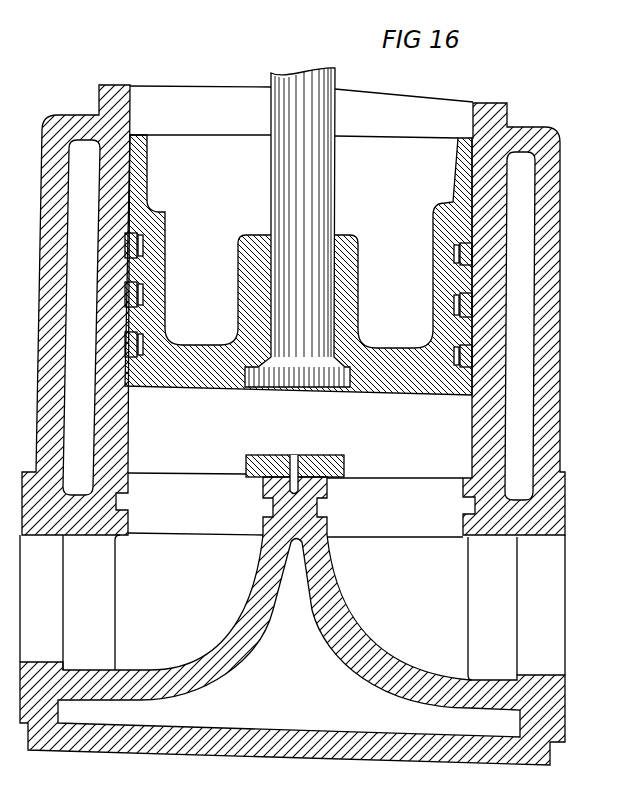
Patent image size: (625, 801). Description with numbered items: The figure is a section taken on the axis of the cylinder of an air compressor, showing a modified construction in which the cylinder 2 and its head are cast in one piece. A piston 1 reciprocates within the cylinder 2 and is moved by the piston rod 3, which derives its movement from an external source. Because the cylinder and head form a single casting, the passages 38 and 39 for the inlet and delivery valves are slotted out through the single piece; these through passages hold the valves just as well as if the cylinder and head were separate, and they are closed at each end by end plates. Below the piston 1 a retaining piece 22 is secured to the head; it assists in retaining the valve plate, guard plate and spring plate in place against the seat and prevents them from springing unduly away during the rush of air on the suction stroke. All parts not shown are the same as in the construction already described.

The piston 1 is at (196, 143).
The cylinder 2 is at (77, 117).
The piston rod 3 is at (281, 76).
The retaining piece 22 is at (258, 456).
The passage 38 is at (195, 504).
The passage 39 is at (395, 507).